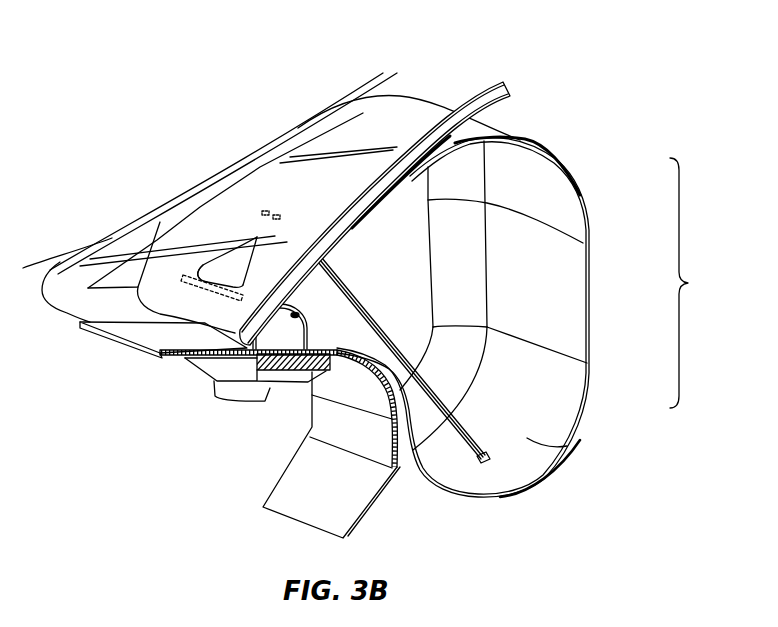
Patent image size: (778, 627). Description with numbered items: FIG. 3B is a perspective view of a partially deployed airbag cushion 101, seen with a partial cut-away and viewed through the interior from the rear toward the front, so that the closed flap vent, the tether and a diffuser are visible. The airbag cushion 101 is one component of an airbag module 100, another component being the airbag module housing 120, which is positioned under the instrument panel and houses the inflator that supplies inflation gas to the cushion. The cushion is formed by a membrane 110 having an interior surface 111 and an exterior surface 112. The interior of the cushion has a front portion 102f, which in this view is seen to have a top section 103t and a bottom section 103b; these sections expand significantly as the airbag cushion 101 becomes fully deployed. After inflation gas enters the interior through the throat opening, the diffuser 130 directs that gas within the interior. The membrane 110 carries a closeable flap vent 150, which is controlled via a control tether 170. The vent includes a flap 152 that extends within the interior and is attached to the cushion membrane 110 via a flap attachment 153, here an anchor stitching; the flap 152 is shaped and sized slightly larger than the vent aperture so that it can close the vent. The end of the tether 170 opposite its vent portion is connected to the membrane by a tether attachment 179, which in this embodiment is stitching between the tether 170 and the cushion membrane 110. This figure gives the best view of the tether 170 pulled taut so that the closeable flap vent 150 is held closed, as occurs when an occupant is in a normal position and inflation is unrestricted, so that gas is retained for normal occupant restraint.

The airbag module 100 is at (155, 447).
The airbag cushion 101 is at (215, 322).
The front portion 102f is at (704, 283).
The top section 103t is at (540, 197).
The bottom section 103b is at (557, 397).
The membrane 110 is at (548, 152).
The interior surface 111 is at (527, 437).
The exterior surface 112 is at (470, 132).
The airbag module housing 120 is at (197, 384).
The diffuser 130 is at (286, 337).
The flap vent 150 is at (226, 236).
The flap 152 is at (210, 268).
The flap attachment 153 is at (185, 278).
The tether 170 is at (338, 340).
The tether attachment 179 is at (491, 461).